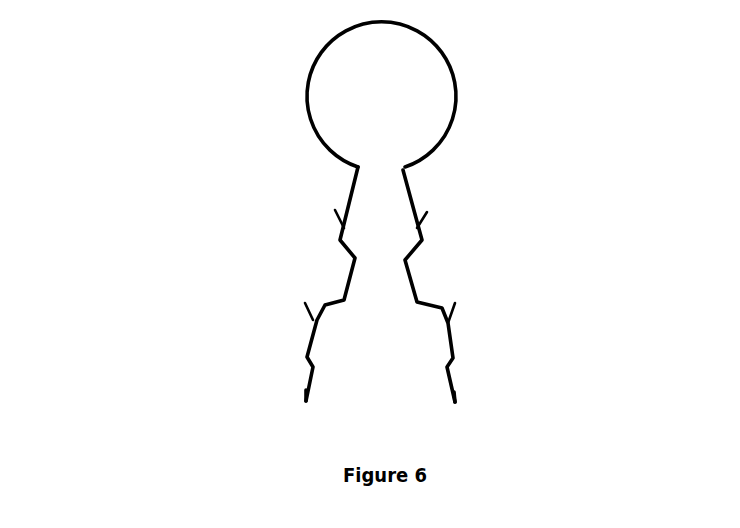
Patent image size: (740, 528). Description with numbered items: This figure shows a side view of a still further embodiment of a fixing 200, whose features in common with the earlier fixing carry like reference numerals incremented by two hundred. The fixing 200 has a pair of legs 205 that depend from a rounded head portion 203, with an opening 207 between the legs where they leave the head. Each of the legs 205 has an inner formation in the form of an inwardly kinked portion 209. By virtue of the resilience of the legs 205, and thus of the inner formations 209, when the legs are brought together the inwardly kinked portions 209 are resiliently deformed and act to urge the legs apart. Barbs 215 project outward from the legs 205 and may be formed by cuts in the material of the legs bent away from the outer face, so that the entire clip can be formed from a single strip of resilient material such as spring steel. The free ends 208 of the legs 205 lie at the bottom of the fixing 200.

The fixing 200 is at (150, 113).
The circular loop 203 is at (463, 75).
The legs 205 is at (458, 333).
The neck opening 207 is at (361, 165).
The leg end 208 is at (298, 402).
The inwardly kinked portion 209 is at (340, 277).
The barb 215 is at (432, 222).